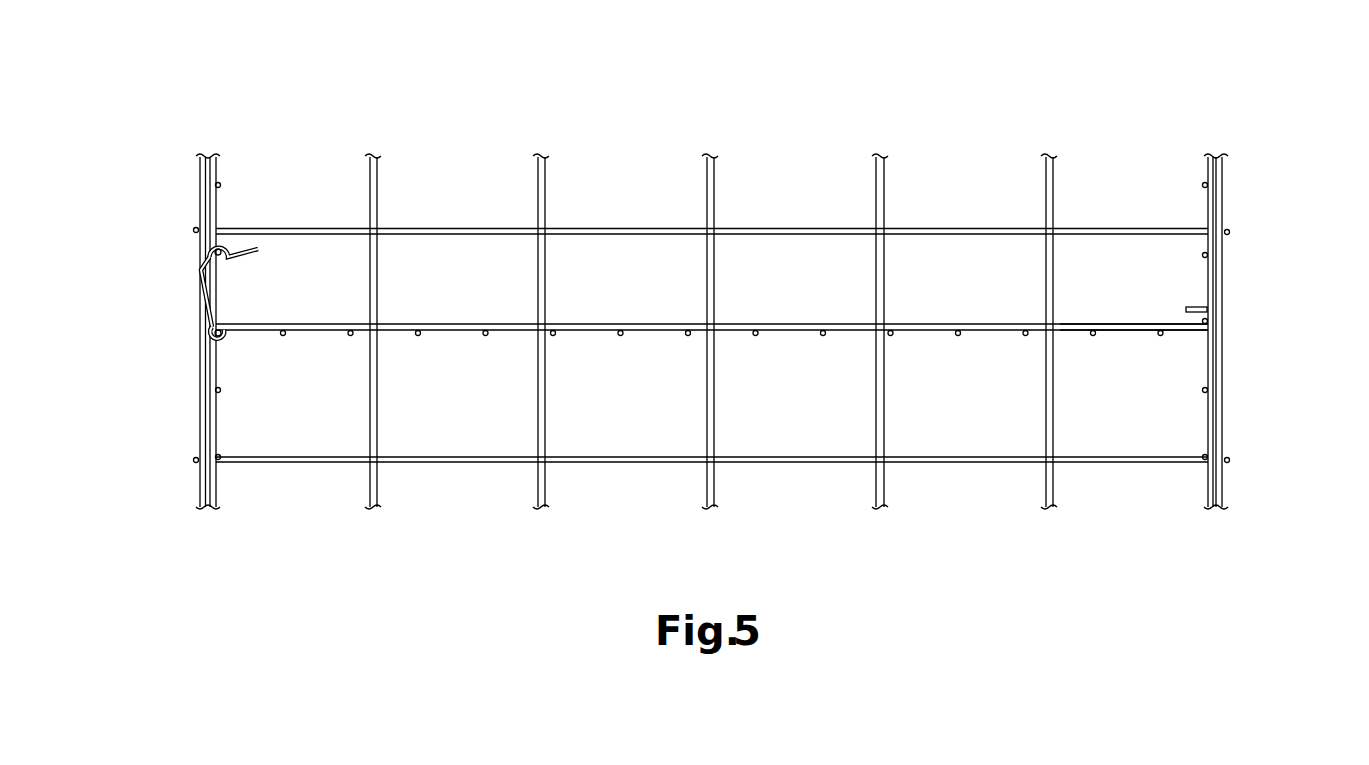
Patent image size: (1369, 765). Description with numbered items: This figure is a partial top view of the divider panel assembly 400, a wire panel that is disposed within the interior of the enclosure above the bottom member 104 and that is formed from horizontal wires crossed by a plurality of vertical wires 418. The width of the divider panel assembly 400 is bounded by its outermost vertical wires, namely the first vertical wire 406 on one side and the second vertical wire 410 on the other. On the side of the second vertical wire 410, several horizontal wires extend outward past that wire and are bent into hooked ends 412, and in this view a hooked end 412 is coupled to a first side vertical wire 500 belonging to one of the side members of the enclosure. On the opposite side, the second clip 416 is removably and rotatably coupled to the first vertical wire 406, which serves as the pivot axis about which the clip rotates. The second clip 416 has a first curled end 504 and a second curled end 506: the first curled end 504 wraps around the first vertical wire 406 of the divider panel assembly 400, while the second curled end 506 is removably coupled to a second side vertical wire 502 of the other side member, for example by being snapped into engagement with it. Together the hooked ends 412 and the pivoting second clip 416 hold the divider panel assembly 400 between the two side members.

The bottom member 104 is at (717, 194).
The divider panel assembly 400 is at (945, 324).
The first vertical wire 406 is at (212, 335).
The second vertical wire 410 is at (1130, 331).
The hooked ends 412 is at (1189, 306).
The second clip 416 is at (200, 283).
The vertical wires 418 is at (688, 336).
The first side vertical wire 500 is at (1210, 318).
The second side vertical wire 502 is at (213, 244).
The first curled end 504 is at (236, 356).
The second curled end 506 is at (226, 272).